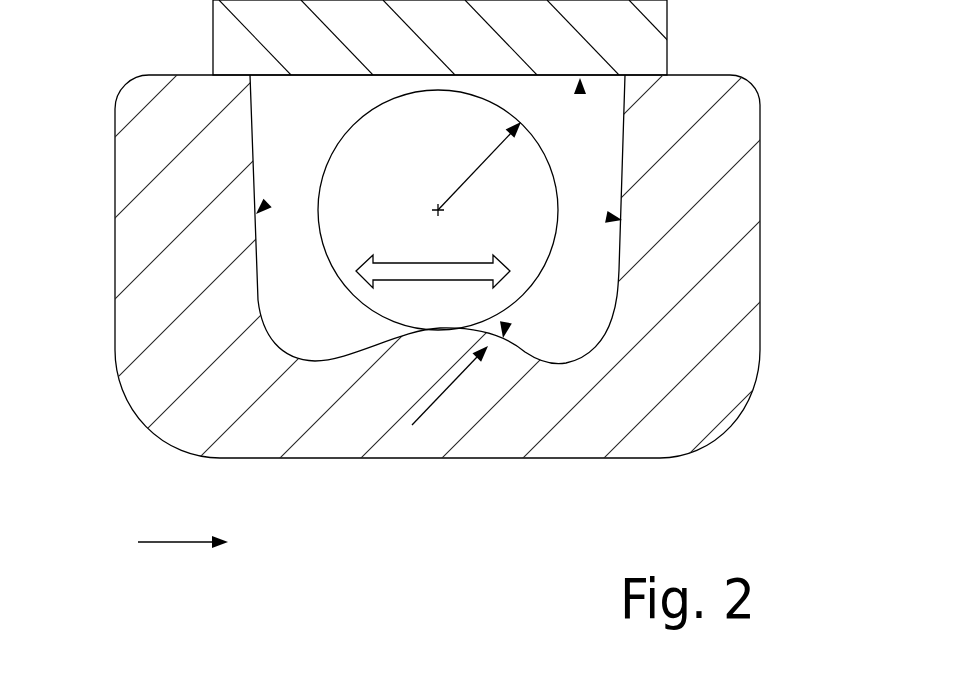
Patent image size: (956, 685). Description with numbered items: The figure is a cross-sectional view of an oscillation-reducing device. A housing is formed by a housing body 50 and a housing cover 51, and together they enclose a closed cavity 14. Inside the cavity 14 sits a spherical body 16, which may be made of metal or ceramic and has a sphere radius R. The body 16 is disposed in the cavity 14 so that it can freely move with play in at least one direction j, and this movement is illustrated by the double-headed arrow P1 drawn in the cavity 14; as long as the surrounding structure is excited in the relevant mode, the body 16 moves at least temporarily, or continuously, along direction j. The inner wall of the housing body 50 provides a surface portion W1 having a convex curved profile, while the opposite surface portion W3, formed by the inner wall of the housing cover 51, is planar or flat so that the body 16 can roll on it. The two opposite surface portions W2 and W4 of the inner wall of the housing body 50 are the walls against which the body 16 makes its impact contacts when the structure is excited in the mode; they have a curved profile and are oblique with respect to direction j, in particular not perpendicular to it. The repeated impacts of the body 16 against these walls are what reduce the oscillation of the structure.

The housing cover 51 is at (233, 40).
The housing body 50 is at (172, 387).
The cavity 14 is at (295, 325).
The body 16 is at (508, 247).
The surface portion W1 is at (506, 322).
The surface portion W2 is at (267, 204).
The surface portion W3 is at (580, 94).
The surface portion W4 is at (607, 217).
The sphere radius R is at (466, 273).
The double-headed arrow P1 is at (392, 265).
The direction j is at (183, 526).